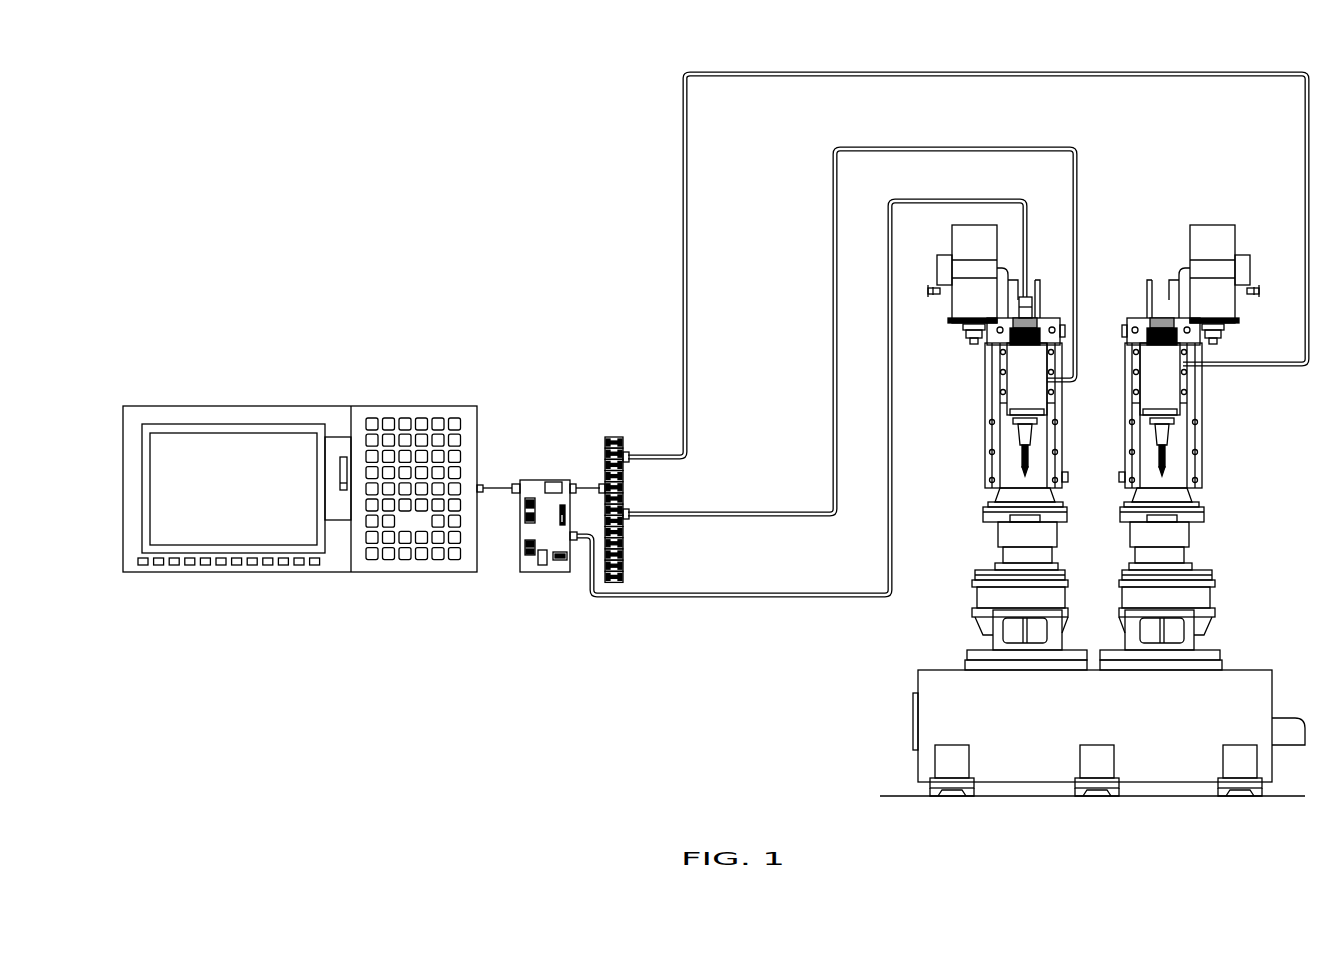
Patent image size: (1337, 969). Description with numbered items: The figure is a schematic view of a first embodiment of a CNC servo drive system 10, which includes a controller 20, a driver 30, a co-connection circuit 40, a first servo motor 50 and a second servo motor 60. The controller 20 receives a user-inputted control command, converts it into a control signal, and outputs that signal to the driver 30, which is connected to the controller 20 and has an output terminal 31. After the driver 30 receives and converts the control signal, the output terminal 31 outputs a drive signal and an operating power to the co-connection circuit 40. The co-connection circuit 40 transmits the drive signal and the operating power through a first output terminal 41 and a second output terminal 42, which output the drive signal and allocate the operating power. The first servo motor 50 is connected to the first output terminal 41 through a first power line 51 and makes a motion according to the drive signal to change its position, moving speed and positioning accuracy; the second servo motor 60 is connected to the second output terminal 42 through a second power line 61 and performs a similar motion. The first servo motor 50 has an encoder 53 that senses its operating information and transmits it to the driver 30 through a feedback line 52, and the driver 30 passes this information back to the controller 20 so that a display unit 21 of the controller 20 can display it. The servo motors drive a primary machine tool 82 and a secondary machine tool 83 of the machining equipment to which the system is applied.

The CNC servo drive system 10 is at (303, 276).
The controller 20 is at (321, 459).
The display unit 21 is at (276, 450).
The driver 30 is at (534, 535).
The output terminal 31 is at (573, 480).
The co-connection circuit 40 is at (611, 477).
The first output terminal 41 is at (627, 512).
The second output terminal 42 is at (627, 457).
The first servo motor 50 is at (1006, 443).
The first power line 51 is at (750, 512).
The feedback line 52 is at (686, 597).
The encoder 53 is at (1032, 300).
The second servo motor 60 is at (1163, 392).
The second power line 61 is at (684, 390).
The primary machine tool 82 is at (975, 478).
The secondary machine tool 83 is at (1215, 477).